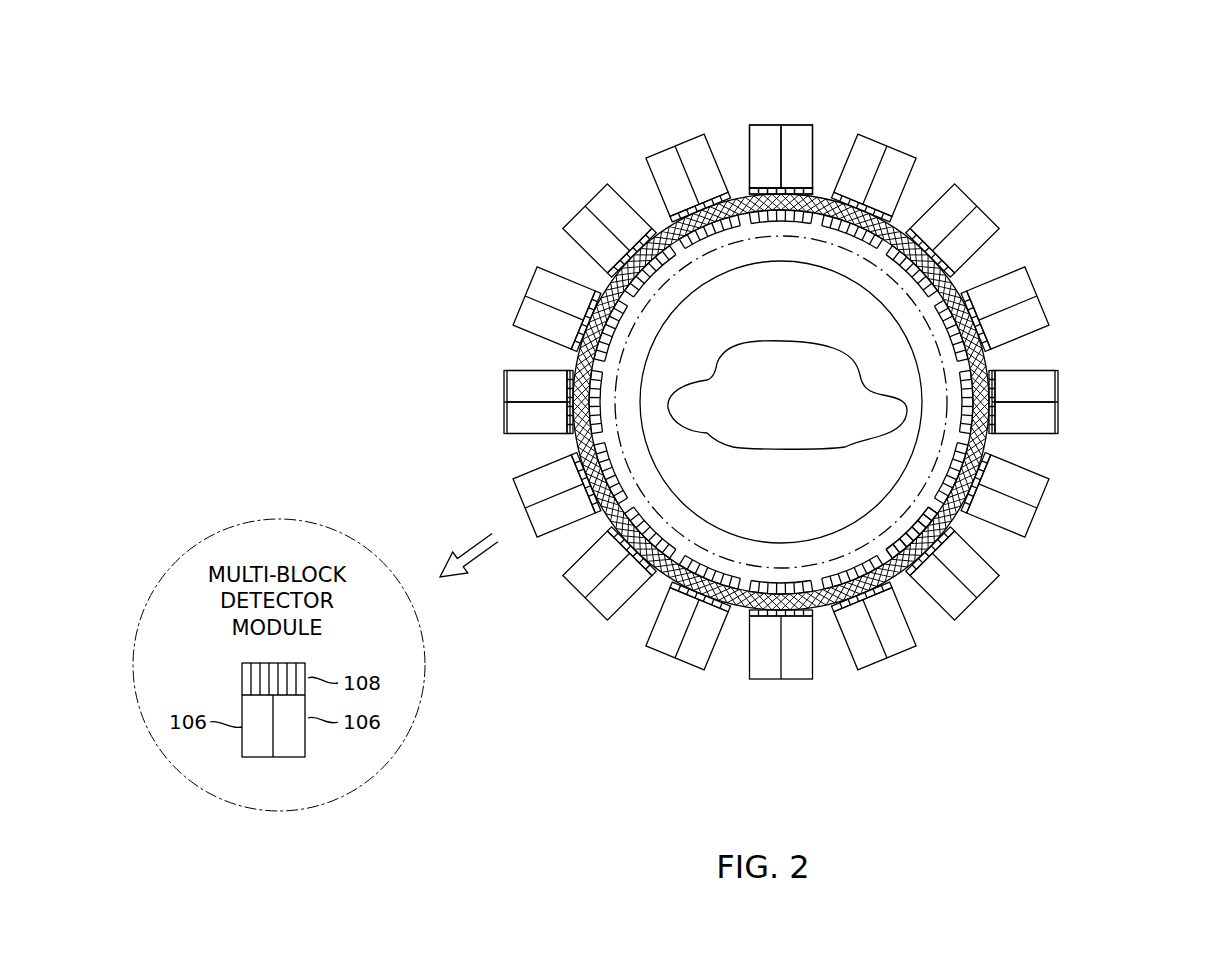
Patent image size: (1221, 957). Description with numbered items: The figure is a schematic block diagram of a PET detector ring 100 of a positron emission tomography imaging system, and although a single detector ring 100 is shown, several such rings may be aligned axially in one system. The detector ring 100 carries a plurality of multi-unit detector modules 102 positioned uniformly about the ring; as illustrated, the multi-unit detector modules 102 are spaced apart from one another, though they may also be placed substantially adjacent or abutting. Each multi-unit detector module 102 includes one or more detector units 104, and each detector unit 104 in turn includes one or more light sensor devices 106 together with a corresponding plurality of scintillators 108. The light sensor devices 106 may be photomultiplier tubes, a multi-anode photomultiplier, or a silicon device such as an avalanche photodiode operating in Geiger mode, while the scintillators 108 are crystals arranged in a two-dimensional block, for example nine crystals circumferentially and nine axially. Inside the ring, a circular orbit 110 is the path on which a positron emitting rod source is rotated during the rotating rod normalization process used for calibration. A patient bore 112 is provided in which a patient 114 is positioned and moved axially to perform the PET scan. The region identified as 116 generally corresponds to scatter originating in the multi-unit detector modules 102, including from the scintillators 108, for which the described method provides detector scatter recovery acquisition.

The detector ring 100 is at (1078, 107).
The multi-unit detector module 102 is at (767, 112).
The detector unit 104 is at (850, 667).
The light sensor device 106 is at (798, 125).
The scintillators 108 is at (818, 182).
The circular orbit 110 is at (876, 266).
The patient bore 112 is at (682, 303).
The patient 114 is at (777, 342).
The scatter region 116 is at (898, 577).